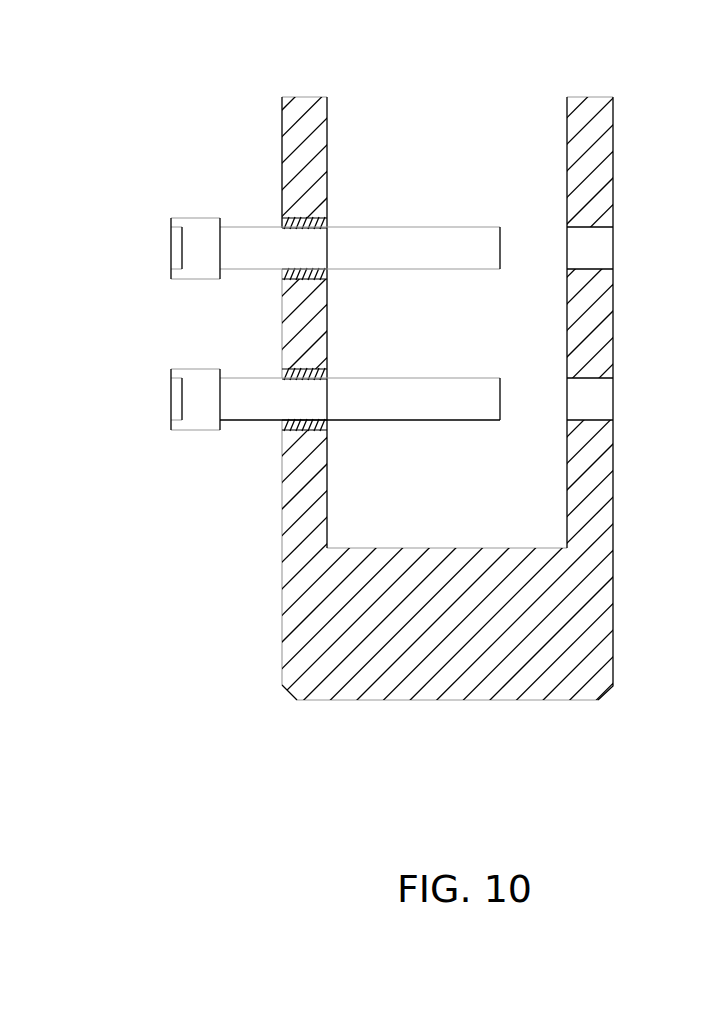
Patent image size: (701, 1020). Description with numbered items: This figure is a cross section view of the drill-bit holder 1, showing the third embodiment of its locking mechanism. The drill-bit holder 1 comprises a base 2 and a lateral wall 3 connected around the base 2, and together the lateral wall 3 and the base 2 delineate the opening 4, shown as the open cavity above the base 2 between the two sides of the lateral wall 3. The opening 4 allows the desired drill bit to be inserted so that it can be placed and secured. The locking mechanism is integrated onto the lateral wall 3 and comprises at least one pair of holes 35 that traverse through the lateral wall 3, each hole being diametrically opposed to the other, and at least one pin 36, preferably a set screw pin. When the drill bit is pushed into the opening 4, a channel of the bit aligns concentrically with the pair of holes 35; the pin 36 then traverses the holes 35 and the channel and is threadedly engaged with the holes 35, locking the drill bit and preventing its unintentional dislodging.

The drill-bit holder 1 is at (178, 571).
The base 2 is at (600, 653).
The lateral wall 3 is at (595, 330).
The opening 4 is at (458, 120).
The pair of holes 35 is at (286, 275).
The pin 36 is at (177, 247).